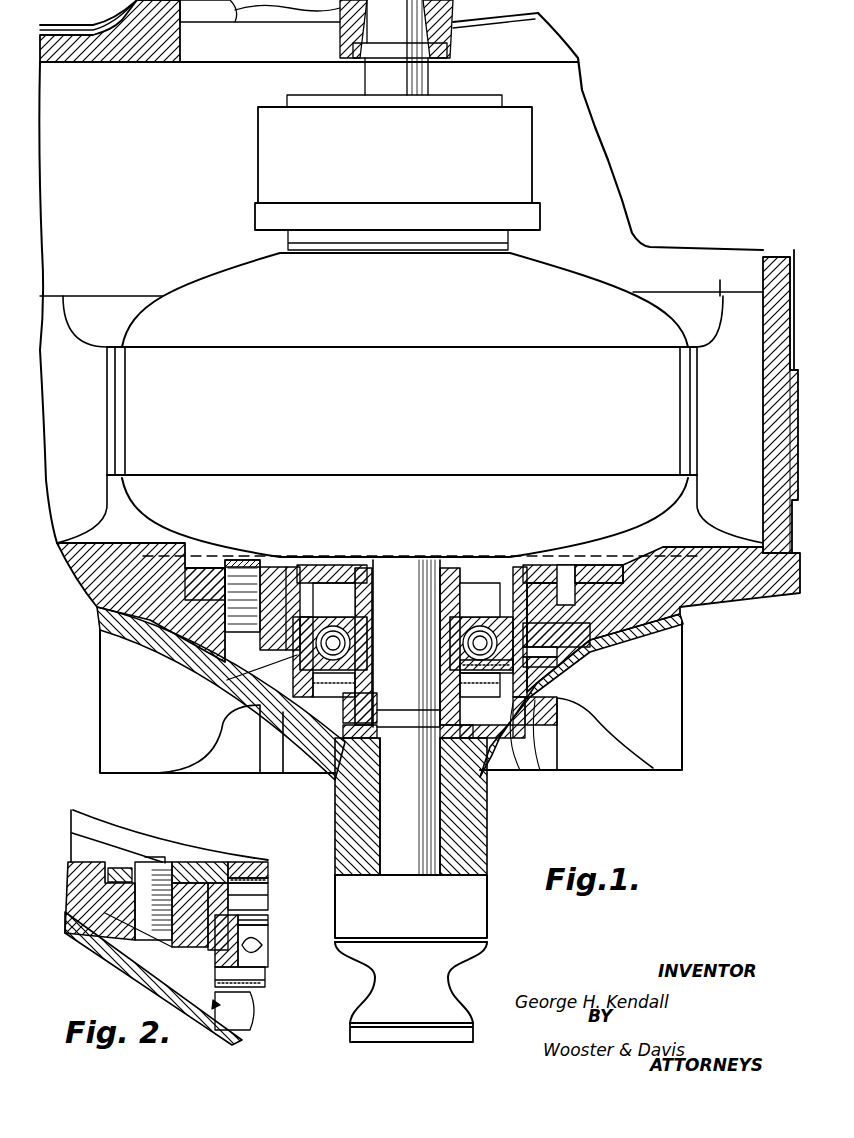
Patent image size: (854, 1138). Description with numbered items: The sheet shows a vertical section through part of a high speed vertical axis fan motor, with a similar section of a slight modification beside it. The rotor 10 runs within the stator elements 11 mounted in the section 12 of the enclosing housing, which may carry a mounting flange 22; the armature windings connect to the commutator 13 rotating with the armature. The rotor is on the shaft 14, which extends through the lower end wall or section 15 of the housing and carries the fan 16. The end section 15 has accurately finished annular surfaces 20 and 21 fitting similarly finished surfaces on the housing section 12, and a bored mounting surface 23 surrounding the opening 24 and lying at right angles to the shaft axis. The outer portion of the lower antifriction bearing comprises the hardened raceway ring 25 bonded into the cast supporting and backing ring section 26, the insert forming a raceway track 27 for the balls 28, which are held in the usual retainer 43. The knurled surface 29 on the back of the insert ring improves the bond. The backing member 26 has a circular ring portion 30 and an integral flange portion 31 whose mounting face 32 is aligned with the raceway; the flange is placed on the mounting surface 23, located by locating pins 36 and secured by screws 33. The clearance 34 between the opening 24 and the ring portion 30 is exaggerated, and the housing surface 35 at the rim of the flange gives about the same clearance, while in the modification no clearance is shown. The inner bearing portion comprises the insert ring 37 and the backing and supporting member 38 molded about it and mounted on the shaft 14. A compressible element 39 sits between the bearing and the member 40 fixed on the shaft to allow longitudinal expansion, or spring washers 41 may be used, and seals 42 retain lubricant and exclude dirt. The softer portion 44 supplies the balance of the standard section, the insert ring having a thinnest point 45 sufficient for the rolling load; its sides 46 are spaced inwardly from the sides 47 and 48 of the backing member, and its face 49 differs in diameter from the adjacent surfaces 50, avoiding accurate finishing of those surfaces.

In FIG. 1, the rotor 10 is at (548, 270).
In FIG. 1, the stator elements 11 is at (716, 296).
In FIG. 1, the housing section 12 is at (770, 262).
In FIG. 1, the commutator 13 is at (262, 172).
In FIG. 1, the shaft 14 is at (405, 572).
In FIG. 1, the lower end wall or section 15 is at (748, 594).
In FIG. 2, the lower end wall or section 15 is at (75, 888).
In FIG. 1, the fan 16 is at (672, 770).
In FIG. 1, the annular surface 20 is at (770, 545).
In FIG. 1, the annular surface 21 is at (770, 520).
In FIG. 1, the mounting flange 22 is at (788, 391).
In FIG. 1, the mounting surface 23 is at (592, 568).
In FIG. 2, the mounting surface 23 is at (155, 857).
In FIG. 1, the opening 24 is at (288, 575).
In FIG. 2, the opening 24 is at (210, 875).
In FIG. 1, the raceway ring 25 is at (550, 662).
In FIG. 2, the raceway ring 25 is at (268, 955).
In FIG. 1, the supporting and backing ring section 26 is at (535, 688).
In FIG. 2, the supporting and backing ring section 26 is at (225, 995).
In FIG. 1, the raceway track 27 is at (408, 621).
In FIG. 2, the raceway track 27 is at (253, 946).
In FIG. 1, the balls 28 is at (480, 643).
In FIG. 1, the knurled surface 29 is at (500, 645).
In FIG. 2, the knurled surface 29 is at (196, 975).
In FIG. 1, the circular ring portion 30 is at (530, 700).
In FIG. 2, the circular ring portion 30 is at (248, 870).
In FIG. 1, the flange portion 31 is at (540, 565).
In FIG. 2, the flange portion 31 is at (210, 862).
In FIG. 1, the mounting face 32 is at (512, 585).
In FIG. 2, the mounting face 32 is at (90, 940).
In FIG. 1, the screws 33 is at (245, 568).
In FIG. 2, the screws 33 is at (160, 862).
In FIG. 1, the clearance 34 is at (625, 642).
In FIG. 2, the clearance 34 is at (170, 970).
In FIG. 1, the housing surface 35 is at (195, 568).
In FIG. 2, the housing surface 35 is at (120, 868).
In FIG. 1, the locating pins 36 is at (566, 565).
In FIG. 1, the insert ring 37 is at (368, 634).
In FIG. 1, the backing and supporting member 38 is at (370, 608).
In FIG. 1, the compressible element 39 is at (505, 770).
In FIG. 1, the member 40 is at (480, 848).
In FIG. 2, the member 40 is at (118, 955).
In FIG. 1, the spring washers 41 is at (350, 732).
In FIG. 1, the seals 42 is at (560, 755).
In FIG. 2, the seals 42 is at (253, 1000).
In FIG. 1, the retainer 43 is at (335, 617).
In FIG. 1, the portion 44 is at (300, 662).
In FIG. 1, the thinnest point 45 is at (247, 673).
In FIG. 2, the thinnest point 45 is at (215, 990).
In FIG. 1, the sides of insert ring 46 is at (490, 705).
In FIG. 2, the sides of insert ring 46 is at (266, 978).
In FIG. 1, the side of backing member 47 is at (498, 583).
In FIG. 2, the side of backing member 47 is at (228, 862).
In FIG. 1, the side of backing member 48 is at (545, 745).
In FIG. 2, the side of backing member 48 is at (215, 1006).
In FIG. 1, the face of insert ring 49 is at (487, 523).
In FIG. 2, the face of insert ring 49 is at (268, 921).
In FIG. 1, the adjacent surfaces 50 is at (310, 683).
In FIG. 2, the adjacent surfaces 50 is at (268, 895).